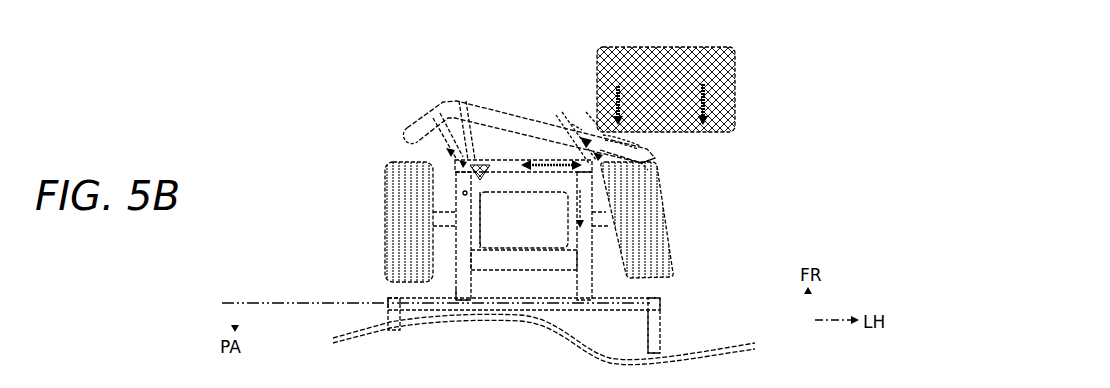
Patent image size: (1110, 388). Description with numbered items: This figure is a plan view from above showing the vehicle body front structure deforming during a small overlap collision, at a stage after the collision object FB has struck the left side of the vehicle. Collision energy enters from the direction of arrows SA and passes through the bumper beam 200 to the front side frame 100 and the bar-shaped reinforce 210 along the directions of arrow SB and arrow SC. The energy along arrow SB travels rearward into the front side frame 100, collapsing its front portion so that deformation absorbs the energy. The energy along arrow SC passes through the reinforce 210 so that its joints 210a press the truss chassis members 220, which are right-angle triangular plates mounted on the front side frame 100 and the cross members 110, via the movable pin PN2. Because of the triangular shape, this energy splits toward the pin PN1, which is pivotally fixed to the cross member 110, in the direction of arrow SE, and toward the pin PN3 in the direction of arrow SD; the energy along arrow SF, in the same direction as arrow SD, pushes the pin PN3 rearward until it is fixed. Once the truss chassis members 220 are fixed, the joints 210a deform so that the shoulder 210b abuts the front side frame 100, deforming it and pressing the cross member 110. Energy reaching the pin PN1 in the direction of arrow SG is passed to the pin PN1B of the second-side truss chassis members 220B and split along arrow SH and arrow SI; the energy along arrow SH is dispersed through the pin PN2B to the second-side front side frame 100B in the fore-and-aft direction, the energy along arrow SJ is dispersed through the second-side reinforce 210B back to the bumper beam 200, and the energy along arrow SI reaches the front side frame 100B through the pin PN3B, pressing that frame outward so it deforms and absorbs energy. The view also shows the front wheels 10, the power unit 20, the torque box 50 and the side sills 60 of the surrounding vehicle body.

The bumper beam 200 is at (438, 118).
The reinforce on the second side in the vehicle width direction 210B is at (412, 136).
The reinforce on the first side in the vehicle width direction 210 is at (655, 158).
The joints 210a is at (648, 170).
The shoulder 210b is at (592, 122).
The arrow SB is at (578, 127).
The arrow SC is at (640, 141).
The collision object FB is at (735, 58).
The arrows SA is at (620, 84).
The arrow SH is at (460, 119).
The pin on the second side in the vehicle width direction PN1B is at (481, 165).
The pin PN1 is at (533, 172).
The arrow SG is at (538, 149).
The arrow SE is at (572, 162).
The arrow SJ is at (438, 142).
The pin on the second side in the vehicle width direction PN2B is at (480, 182).
The arrow SI is at (473, 177).
The pin on the second side in the vehicle width direction PN3B is at (463, 195).
The front wheels 10 is at (407, 250).
The cross members 110 is at (576, 185).
The truss chassis members 220 is at (524, 220).
The truss chassis members on the second side in the vehicle width direction 220B is at (553, 228).
The arrow SF is at (597, 230).
The power unit 20 is at (498, 262).
The front side frame on the first side in the vehicle width direction 100 is at (583, 285).
The front side frame on the second side in the vehicle width direction 100B is at (458, 295).
The torque box 50 is at (657, 312).
The side sills 60 is at (397, 320).
The pin PN2 is at (600, 170).
The arrow SD is at (598, 172).
The pin PN3 is at (605, 176).